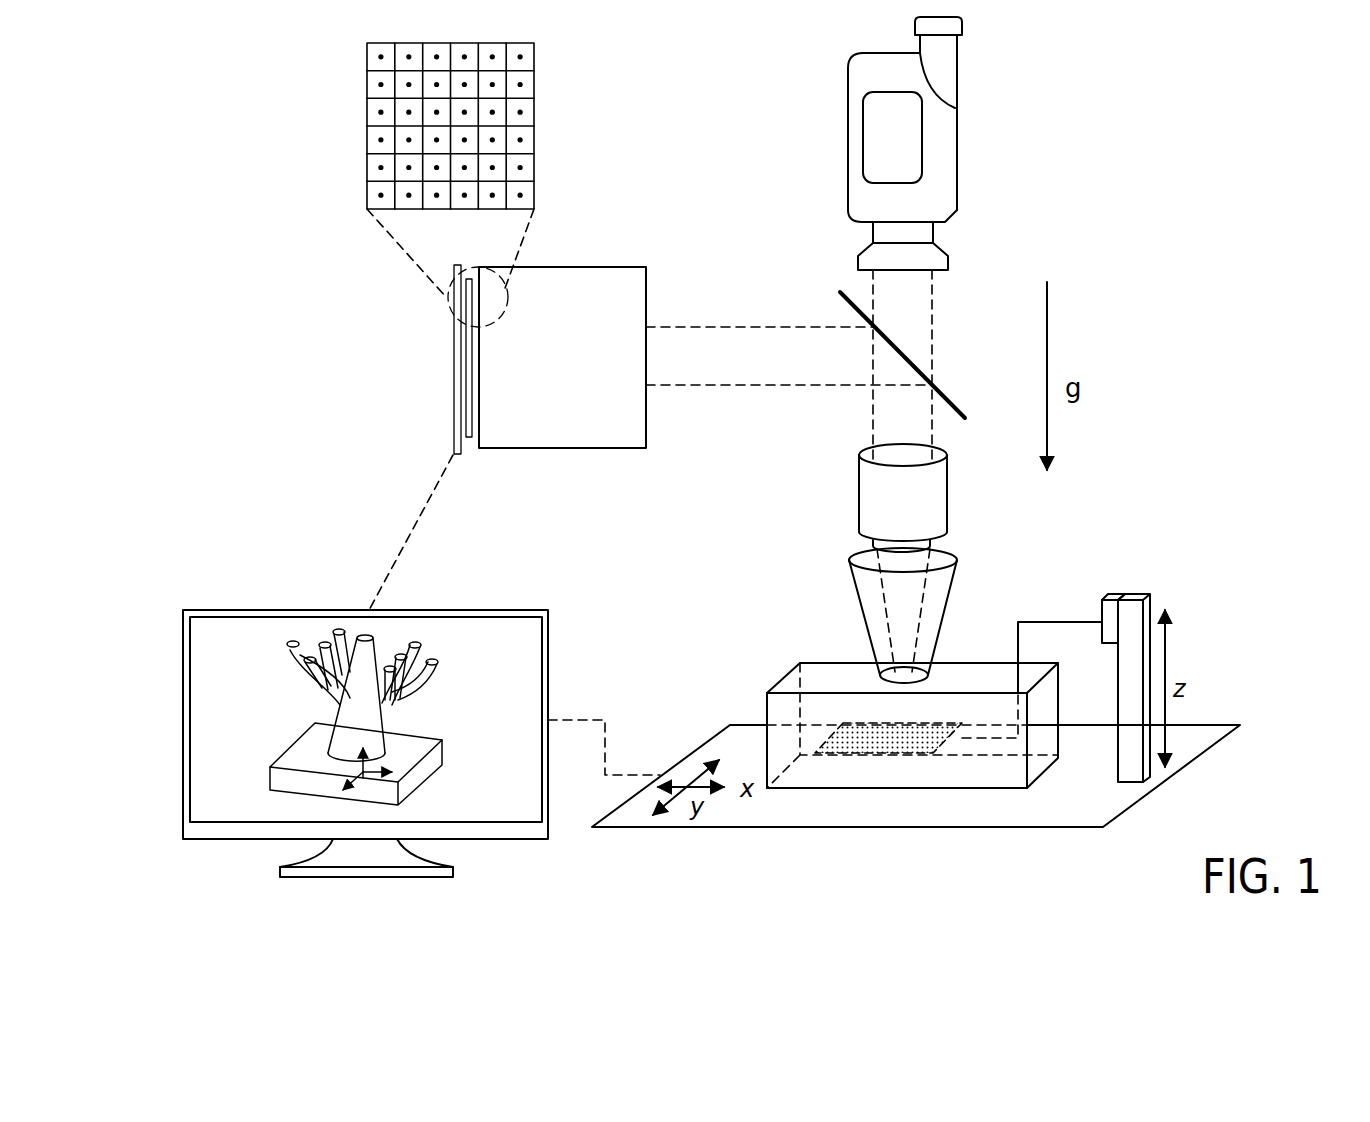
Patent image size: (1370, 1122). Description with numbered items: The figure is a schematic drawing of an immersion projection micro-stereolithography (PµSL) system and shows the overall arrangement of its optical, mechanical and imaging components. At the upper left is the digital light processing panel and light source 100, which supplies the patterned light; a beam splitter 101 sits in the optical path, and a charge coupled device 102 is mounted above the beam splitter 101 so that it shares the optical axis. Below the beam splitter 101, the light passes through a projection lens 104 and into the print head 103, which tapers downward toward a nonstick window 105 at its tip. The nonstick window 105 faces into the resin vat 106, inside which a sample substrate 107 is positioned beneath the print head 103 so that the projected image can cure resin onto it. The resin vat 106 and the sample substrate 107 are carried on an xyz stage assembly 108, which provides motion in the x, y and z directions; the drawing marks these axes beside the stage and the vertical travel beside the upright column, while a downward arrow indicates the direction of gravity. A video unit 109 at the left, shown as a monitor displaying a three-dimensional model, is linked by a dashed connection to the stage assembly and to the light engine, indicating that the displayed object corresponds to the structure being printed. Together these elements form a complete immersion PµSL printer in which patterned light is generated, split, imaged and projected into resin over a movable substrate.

The digital light processing panel and light source 100 is at (600, 266).
The beam splitter 101 is at (840, 293).
The charge coupled device 102 is at (952, 158).
The print head 103 is at (952, 610).
The projection lens 104 is at (858, 489).
The nonstick window 105 is at (870, 678).
The resin vat 106 is at (748, 693).
The sample substrate 107 is at (932, 750).
The xyz stage assembly 108 is at (838, 827).
The video unit 109 is at (317, 877).